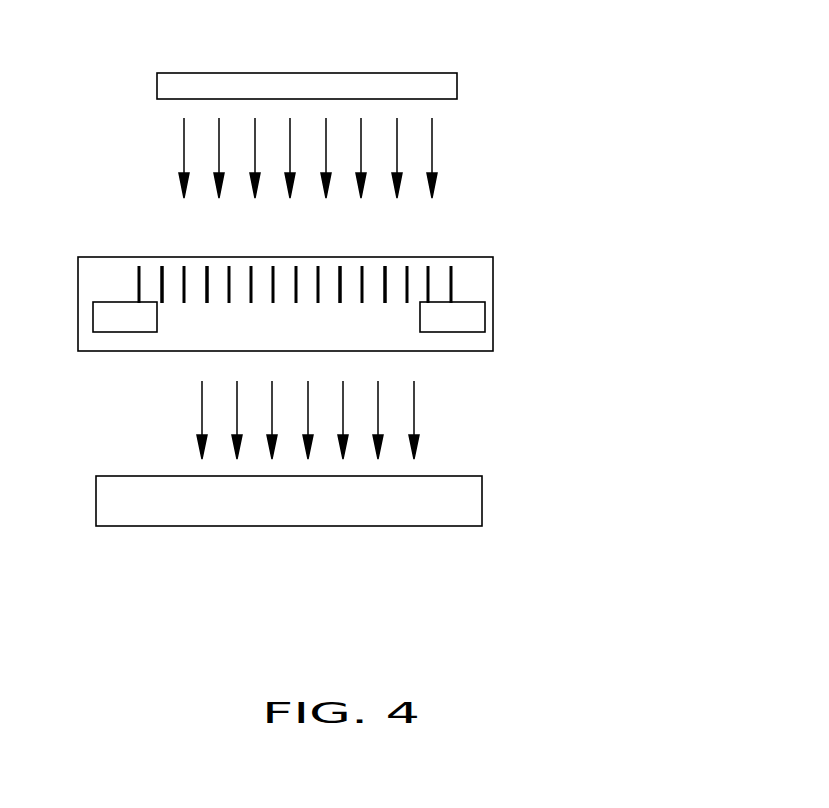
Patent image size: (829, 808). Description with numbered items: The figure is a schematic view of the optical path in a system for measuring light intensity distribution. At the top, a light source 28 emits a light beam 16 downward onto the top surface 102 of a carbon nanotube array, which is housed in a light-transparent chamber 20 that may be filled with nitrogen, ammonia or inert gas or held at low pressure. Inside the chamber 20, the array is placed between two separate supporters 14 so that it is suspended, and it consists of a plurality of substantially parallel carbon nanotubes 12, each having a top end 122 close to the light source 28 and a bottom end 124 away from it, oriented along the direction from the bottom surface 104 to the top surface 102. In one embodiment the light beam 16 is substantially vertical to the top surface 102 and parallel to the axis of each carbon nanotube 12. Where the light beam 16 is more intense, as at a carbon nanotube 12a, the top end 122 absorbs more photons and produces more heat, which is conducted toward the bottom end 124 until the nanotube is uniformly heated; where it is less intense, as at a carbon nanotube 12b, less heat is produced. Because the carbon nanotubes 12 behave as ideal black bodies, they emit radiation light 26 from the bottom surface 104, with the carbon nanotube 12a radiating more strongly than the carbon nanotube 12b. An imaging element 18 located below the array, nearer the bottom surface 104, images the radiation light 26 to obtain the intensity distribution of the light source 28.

The light source 28 is at (407, 83).
The light beam 16 is at (433, 157).
The chamber 20 is at (462, 257).
The supporter 14 is at (103, 315).
The carbon nanotube 12 is at (453, 283).
The carbon nanotube 12a is at (160, 273).
The carbon nanotube 12b is at (205, 280).
The top end 122 is at (340, 273).
The bottom end 124 is at (340, 298).
The top surface 102 is at (389, 258).
The bottom surface 104 is at (388, 312).
The radiation light 26 is at (198, 410).
The imaging element 18 is at (467, 505).